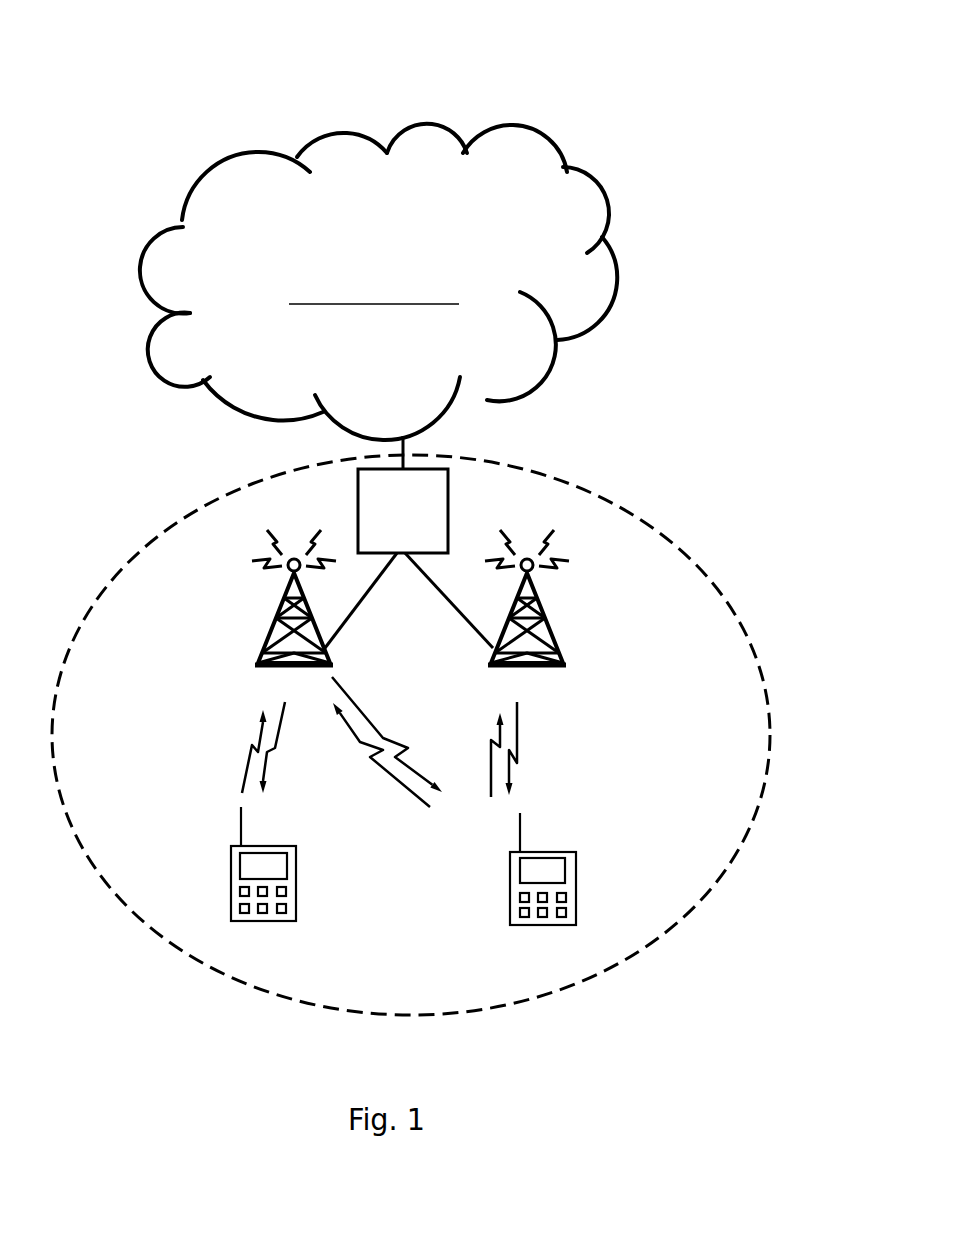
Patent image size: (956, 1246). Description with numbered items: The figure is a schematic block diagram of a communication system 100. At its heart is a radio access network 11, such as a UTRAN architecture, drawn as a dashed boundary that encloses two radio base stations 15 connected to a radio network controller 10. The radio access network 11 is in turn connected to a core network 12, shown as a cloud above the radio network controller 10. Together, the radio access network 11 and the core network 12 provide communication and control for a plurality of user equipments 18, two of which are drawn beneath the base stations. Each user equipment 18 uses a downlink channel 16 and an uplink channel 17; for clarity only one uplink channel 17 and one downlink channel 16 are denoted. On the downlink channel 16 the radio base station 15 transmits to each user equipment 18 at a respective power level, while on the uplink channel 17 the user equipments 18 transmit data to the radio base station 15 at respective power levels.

The communication system 100 is at (761, 78).
The core network 12 is at (397, 273).
The radio network controller 10 is at (419, 510).
The radio access network 11 is at (672, 540).
The radio base station 15 is at (268, 638).
The downlink channel 16 is at (520, 743).
The uplink channel 17 is at (245, 752).
The user equipment 18 is at (232, 848).